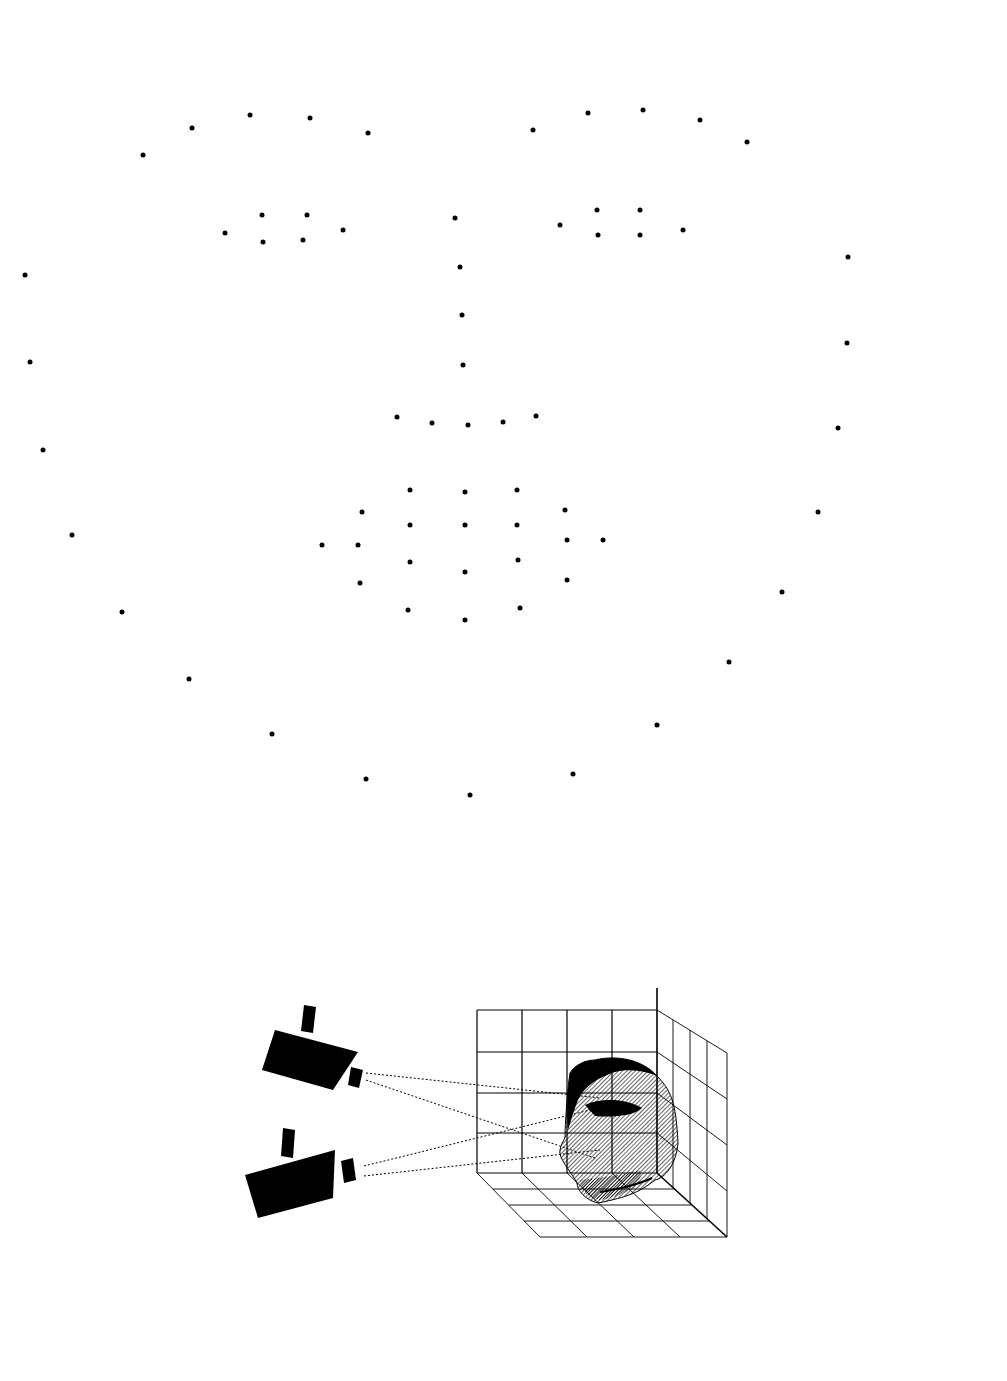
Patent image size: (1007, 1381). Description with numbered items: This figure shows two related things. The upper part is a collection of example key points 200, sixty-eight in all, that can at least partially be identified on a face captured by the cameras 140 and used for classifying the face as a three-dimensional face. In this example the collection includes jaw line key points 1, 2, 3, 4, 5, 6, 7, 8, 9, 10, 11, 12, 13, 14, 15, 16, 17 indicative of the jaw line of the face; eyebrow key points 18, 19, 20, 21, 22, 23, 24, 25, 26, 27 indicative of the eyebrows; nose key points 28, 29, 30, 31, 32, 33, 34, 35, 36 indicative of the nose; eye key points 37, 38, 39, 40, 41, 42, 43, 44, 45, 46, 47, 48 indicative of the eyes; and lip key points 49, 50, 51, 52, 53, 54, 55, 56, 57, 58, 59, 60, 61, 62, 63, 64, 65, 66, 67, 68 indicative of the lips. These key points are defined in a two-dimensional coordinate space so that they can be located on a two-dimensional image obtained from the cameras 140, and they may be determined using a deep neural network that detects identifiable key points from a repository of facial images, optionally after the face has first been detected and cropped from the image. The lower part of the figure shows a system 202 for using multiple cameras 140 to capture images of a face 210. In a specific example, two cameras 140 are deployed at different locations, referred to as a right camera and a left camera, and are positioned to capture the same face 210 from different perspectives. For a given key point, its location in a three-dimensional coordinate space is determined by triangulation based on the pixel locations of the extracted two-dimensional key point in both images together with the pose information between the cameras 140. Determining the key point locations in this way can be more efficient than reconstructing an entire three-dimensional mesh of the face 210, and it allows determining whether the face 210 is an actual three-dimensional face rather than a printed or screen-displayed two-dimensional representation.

The facial landmark map 200 is at (159, 33).
The system 202 is at (186, 923).
The camera 140 is at (272, 1027).
The face 210 is at (594, 1055).
The key point 1 is at (36, 275).
The key point 2 is at (41, 362).
The key point 3 is at (54, 450).
The key point 4 is at (83, 535).
The key point 5 is at (133, 612).
The key point 6 is at (200, 679).
The key point 7 is at (283, 734).
The key point 8 is at (377, 779).
The key point 9 is at (481, 795).
The key point 10 is at (589, 774).
The key point 11 is at (673, 725).
The key point 12 is at (745, 662).
The key point 13 is at (798, 592).
The key point 14 is at (834, 512).
The key point 15 is at (854, 428).
The key point 16 is at (863, 343).
The key point 17 is at (864, 257).
The key point 18 is at (159, 155).
The key point 19 is at (208, 128).
The key point 20 is at (266, 115).
The key point 21 is at (326, 118).
The key point 22 is at (384, 133).
The key point 23 is at (549, 130).
The key point 24 is at (604, 113).
The key point 25 is at (659, 110).
The key point 26 is at (716, 120).
The key point 27 is at (763, 142).
The key point 28 is at (471, 218).
The key point 29 is at (476, 267).
The key point 30 is at (478, 315).
The key point 31 is at (479, 365).
The key point 32 is at (413, 417).
The key point 33 is at (448, 423).
The key point 34 is at (484, 425).
The key point 35 is at (519, 422).
The key point 36 is at (552, 416).
The key point 37 is at (241, 233).
The key point 38 is at (278, 215).
The key point 39 is at (323, 215).
The key point 40 is at (359, 230).
The key point 41 is at (319, 240).
The key point 42 is at (279, 242).
The key point 43 is at (576, 225).
The key point 44 is at (613, 210).
The key point 45 is at (656, 210).
The key point 46 is at (699, 230).
The key point 47 is at (656, 235).
The key point 48 is at (614, 235).
The key point 49 is at (338, 545).
The key point 50 is at (378, 512).
The key point 51 is at (426, 490).
The key point 52 is at (481, 492).
The key point 53 is at (533, 490).
The key point 54 is at (581, 510).
The key point 55 is at (619, 540).
The key point 56 is at (583, 580).
The key point 57 is at (536, 608).
The key point 58 is at (481, 620).
The key point 59 is at (424, 610).
The key point 60 is at (376, 583).
The key point 61 is at (374, 545).
The key point 62 is at (426, 525).
The key point 63 is at (481, 525).
The key point 64 is at (533, 525).
The key point 65 is at (583, 540).
The key point 66 is at (534, 560).
The key point 67 is at (481, 572).
The key point 68 is at (426, 562).